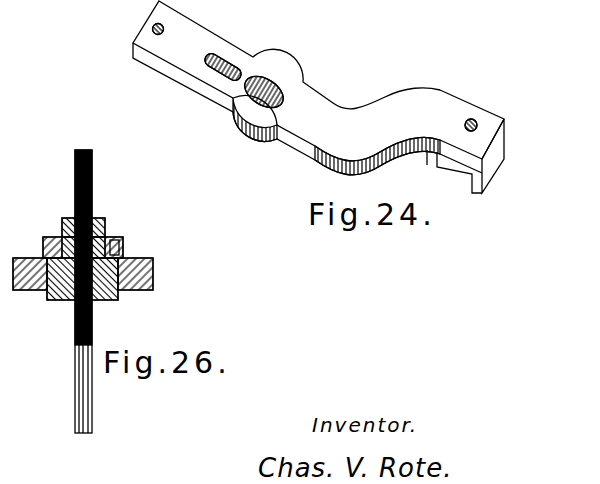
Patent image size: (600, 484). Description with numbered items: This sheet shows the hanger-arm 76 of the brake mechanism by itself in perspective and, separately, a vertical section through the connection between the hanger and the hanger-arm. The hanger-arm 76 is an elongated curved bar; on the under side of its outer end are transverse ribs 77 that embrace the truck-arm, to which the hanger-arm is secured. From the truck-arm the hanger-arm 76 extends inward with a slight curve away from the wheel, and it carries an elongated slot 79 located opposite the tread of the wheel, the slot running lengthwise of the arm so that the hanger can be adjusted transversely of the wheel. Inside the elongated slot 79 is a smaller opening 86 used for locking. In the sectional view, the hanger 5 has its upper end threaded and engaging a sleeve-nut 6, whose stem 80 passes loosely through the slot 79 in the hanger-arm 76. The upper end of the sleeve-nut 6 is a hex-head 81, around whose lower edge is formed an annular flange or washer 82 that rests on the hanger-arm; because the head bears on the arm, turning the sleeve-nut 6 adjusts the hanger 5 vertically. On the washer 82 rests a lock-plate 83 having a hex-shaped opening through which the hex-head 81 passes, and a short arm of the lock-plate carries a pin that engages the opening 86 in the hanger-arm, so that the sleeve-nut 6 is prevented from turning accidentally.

In FIG. 24, the hanger-arm 76 is at (340, 121).
In FIG. 24, the transverse ribs 77 is at (480, 185).
In FIG. 24, the slot 79 is at (264, 90).
In FIG. 24, the opening 86 is at (222, 62).
In FIG. 26, the hanger 5 is at (80, 385).
In FIG. 26, the sleeve-nut 6 is at (100, 253).
In FIG. 26, the stem 80 is at (68, 292).
In FIG. 26, the hex-head 81 is at (98, 250).
In FIG. 26, the annular flange or washer 82 is at (123, 250).
In FIG. 26, the lock-plate 83 is at (53, 248).